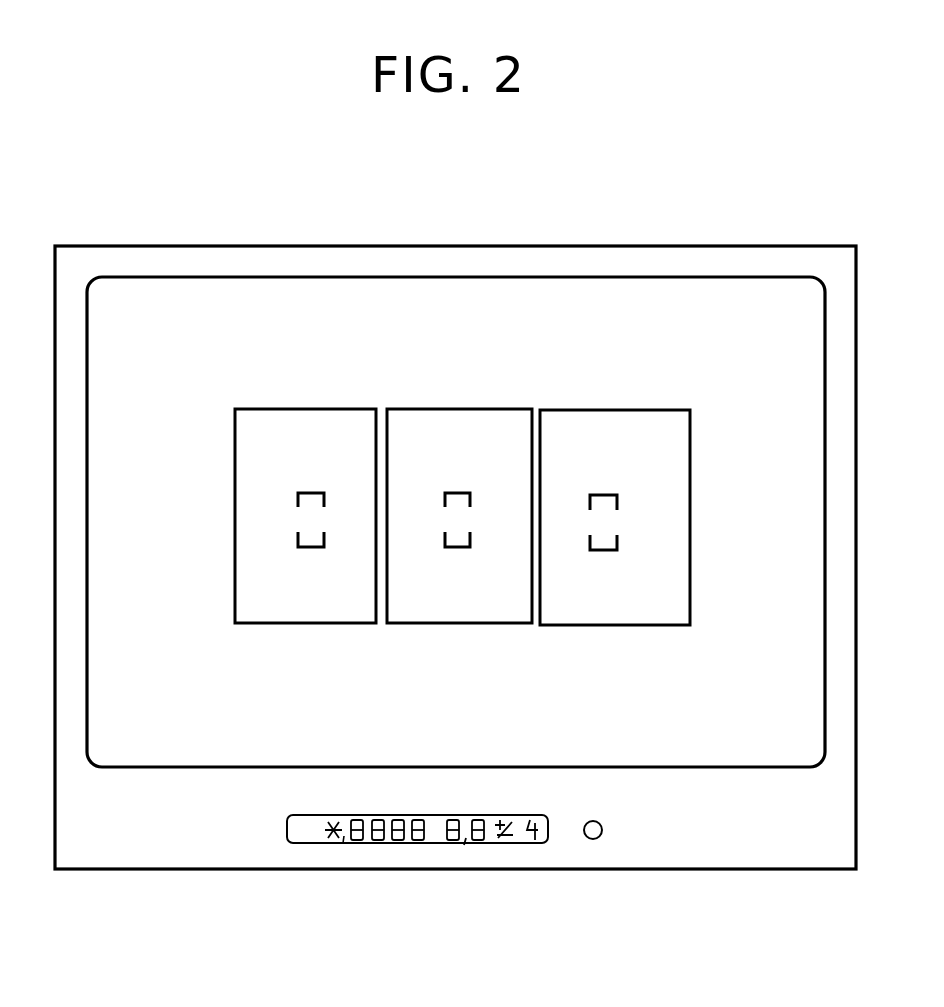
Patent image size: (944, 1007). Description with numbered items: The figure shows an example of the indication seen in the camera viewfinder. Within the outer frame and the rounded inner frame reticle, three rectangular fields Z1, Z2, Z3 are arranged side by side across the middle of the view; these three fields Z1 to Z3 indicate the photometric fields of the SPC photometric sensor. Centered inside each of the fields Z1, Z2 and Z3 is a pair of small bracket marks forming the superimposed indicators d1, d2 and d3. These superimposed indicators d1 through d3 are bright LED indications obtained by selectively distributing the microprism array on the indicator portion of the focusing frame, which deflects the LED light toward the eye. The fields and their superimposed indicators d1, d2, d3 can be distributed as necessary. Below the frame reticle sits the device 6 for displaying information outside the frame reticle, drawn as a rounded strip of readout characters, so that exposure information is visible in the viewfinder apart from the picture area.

The photometric field Z1 is at (287, 422).
The photometric field Z2 is at (448, 423).
The photometric field Z3 is at (592, 425).
The superimposed indicator d1 is at (315, 550).
The superimposed indicator d2 is at (460, 553).
The superimposed indicator d3 is at (608, 555).
The device for displaying information 6 is at (348, 838).